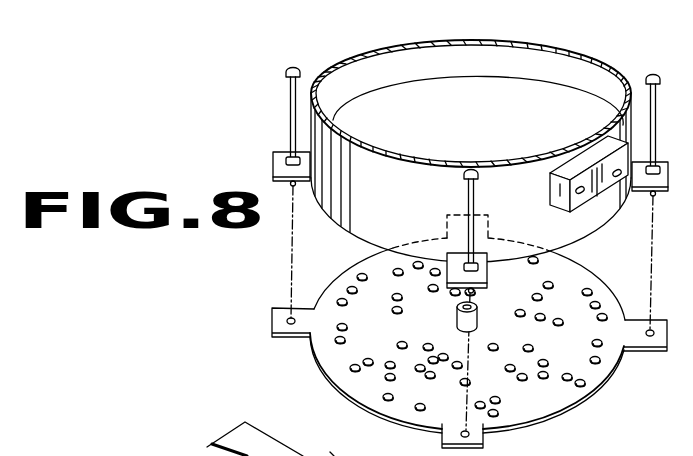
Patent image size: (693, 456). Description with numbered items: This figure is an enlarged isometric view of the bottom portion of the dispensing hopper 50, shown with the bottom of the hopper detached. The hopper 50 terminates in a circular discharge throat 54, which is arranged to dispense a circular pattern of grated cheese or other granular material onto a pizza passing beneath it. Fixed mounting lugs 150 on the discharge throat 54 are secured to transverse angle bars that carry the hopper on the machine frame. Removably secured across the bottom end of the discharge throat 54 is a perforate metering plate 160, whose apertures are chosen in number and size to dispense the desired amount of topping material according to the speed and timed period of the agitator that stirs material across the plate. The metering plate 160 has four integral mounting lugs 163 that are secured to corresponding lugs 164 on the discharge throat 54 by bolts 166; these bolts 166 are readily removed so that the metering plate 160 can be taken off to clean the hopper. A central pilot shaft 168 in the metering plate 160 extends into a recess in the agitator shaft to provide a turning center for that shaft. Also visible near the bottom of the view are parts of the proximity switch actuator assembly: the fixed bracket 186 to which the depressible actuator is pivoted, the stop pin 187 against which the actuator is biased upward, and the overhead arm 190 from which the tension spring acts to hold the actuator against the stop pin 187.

The dispensing hopper 50 is at (596, 59).
The circular discharge throat 54 is at (333, 62).
The fixed mounting lug 150 is at (601, 152).
The perforate metering plate 160 is at (320, 355).
The integral mounting lug 163 is at (447, 217).
The lug 164 is at (277, 164).
The bolt 166 is at (290, 97).
The central pilot shaft 168 is at (456, 323).
The fixed bracket 186 is at (212, 452).
The stop pin 187 is at (351, 446).
The overhead arm 190 is at (240, 433).